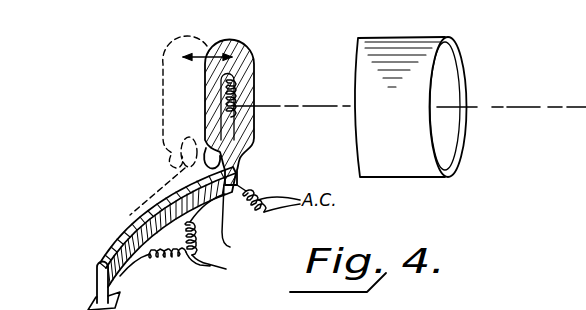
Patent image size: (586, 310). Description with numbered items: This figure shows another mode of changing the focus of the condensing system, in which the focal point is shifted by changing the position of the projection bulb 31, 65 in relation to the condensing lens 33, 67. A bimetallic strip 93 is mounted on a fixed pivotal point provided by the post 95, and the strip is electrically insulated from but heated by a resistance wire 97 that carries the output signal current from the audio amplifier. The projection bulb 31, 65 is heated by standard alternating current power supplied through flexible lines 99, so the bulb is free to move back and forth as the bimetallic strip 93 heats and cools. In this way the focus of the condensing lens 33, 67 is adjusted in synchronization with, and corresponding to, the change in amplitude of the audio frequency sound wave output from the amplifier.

The projection bulb 31 is at (230, 117).
The projection bulb 65 is at (247, 55).
The condensing lens 33 is at (470, 89).
The condensing lens 67 is at (444, 38).
The bimetallic strip 93 is at (222, 221).
The post 95 is at (97, 273).
The resistance wire 97 is at (187, 265).
The flexible lines 99 is at (250, 193).